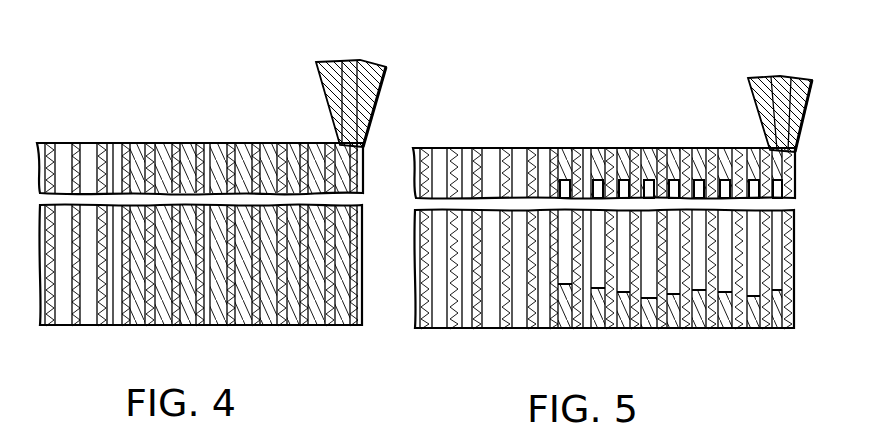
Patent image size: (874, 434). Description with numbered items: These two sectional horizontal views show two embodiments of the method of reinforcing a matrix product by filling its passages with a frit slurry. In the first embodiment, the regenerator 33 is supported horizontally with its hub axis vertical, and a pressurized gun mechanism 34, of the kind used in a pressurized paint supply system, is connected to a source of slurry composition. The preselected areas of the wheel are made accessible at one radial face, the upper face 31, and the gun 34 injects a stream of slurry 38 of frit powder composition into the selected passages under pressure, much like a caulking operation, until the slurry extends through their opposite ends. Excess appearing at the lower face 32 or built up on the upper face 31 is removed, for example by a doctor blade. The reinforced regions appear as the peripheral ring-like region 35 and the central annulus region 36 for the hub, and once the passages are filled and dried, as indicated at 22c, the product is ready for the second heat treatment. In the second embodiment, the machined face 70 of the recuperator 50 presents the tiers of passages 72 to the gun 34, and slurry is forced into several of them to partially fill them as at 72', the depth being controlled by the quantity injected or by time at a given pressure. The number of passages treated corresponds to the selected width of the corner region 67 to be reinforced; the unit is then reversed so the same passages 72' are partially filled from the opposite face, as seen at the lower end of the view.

In FIG. 4, the upper face 31 is at (260, 143).
In FIG. 4, the lower face 32 is at (78, 327).
In FIG. 4, the regenerator 33 is at (173, 130).
In FIG. 4, the pressurized gun mechanism 34 is at (378, 95).
In FIG. 5, the pressurized gun mechanism 34 is at (805, 124).
In FIG. 4, the peripheral ring-like region 35 is at (362, 330).
In FIG. 4, the central annulus region 36 is at (223, 298).
In FIG. 4, the stream of slurry 38 is at (351, 70).
In FIG. 4, the filled and dried passages 22c is at (348, 313).
In FIG. 5, the recuperator 50 is at (595, 115).
In FIG. 5, the corner region 67 is at (557, 148).
In FIG. 5, the machined face 70 is at (790, 152).
In FIG. 5, the passages 72 is at (604, 298).
In FIG. 5, the partially filled passages 72' is at (633, 223).